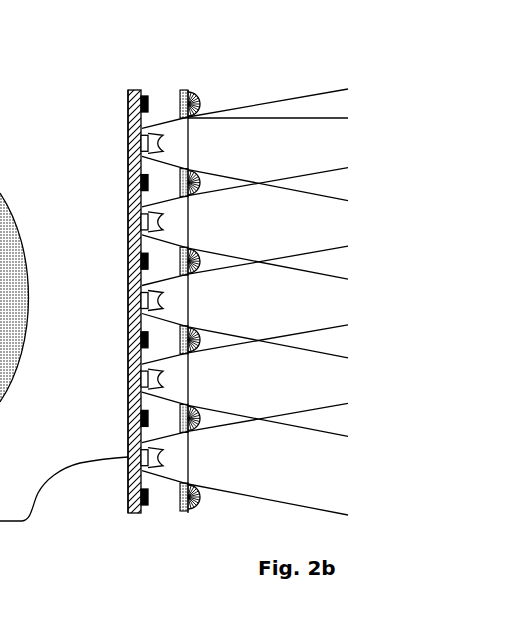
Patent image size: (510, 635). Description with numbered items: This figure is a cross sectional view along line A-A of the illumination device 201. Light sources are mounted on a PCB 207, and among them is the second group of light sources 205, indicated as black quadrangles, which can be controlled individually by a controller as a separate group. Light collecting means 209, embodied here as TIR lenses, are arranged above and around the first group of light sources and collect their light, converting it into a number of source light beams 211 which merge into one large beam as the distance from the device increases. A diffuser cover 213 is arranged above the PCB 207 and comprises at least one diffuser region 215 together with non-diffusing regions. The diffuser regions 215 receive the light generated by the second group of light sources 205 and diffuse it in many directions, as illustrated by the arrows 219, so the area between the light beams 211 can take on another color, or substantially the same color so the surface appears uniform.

The illumination device 201 is at (188, 57).
The second group of light sources 205 is at (143, 188).
The PCB 207 is at (130, 513).
The light collecting means 209 is at (128, 256).
The source light beams 211 is at (245, 302).
The diffuser cover 213 is at (185, 513).
The diffuser region 215 is at (142, 147).
The arrows 219 is at (198, 98).